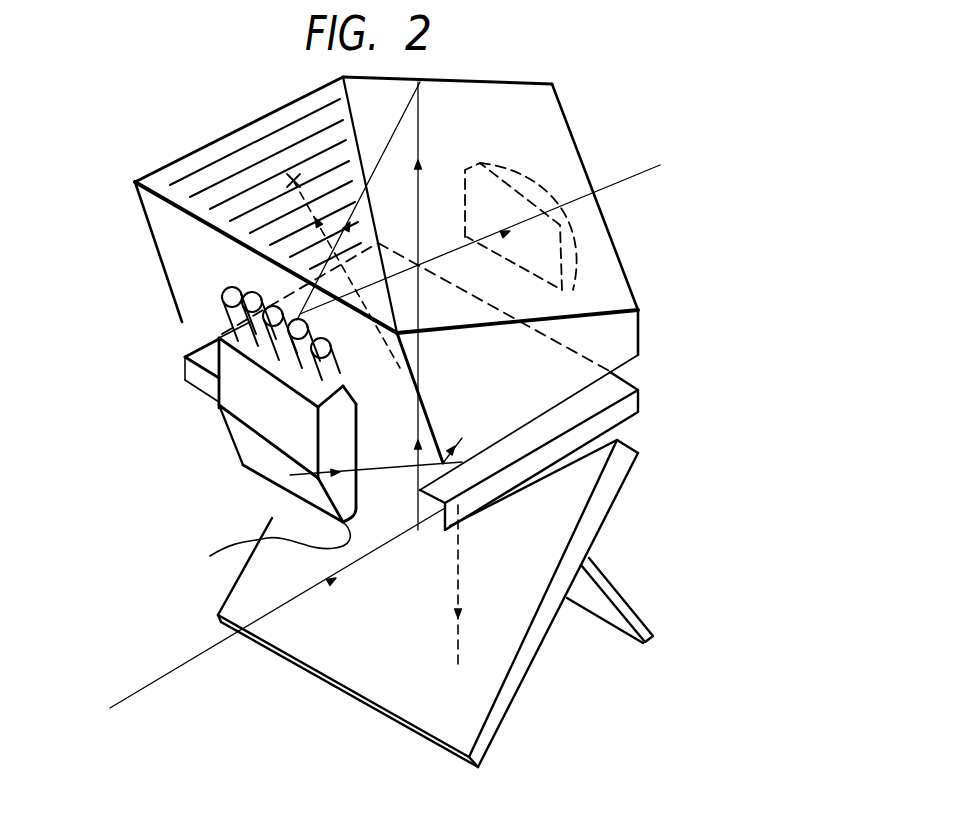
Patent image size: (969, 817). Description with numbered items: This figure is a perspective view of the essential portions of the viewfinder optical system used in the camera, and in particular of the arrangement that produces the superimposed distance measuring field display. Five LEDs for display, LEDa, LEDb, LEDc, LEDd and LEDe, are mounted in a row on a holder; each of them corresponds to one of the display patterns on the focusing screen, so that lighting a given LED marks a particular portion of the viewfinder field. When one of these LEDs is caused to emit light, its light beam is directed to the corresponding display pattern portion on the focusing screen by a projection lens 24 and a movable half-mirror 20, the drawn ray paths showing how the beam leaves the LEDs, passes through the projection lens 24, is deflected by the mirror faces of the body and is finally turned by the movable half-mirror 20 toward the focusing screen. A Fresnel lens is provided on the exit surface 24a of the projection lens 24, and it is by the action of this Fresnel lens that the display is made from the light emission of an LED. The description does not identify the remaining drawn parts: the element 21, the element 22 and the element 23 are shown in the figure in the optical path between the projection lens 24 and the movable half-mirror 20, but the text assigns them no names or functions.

The movable half-mirror 20 is at (357, 672).
The glass plate 21 is at (627, 413).
The prism 22 is at (552, 138).
The cylindrical lens 23 is at (568, 262).
The projection lens 24 is at (263, 463).
The exit surface 24a is at (258, 552).
The LED for display LEDa is at (322, 385).
The LED for display LEDb is at (303, 373).
The LED for display LEDc is at (280, 357).
The LED for display LEDd is at (248, 326).
The LED for display LEDe is at (228, 320).